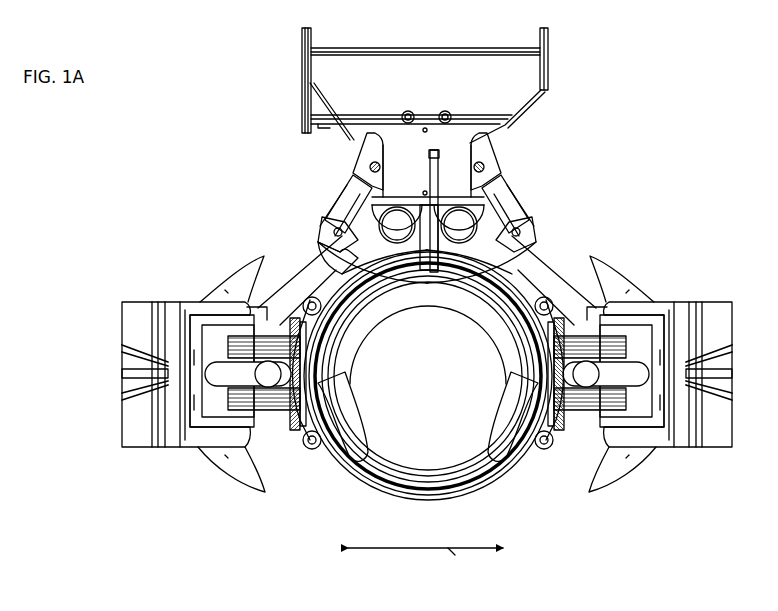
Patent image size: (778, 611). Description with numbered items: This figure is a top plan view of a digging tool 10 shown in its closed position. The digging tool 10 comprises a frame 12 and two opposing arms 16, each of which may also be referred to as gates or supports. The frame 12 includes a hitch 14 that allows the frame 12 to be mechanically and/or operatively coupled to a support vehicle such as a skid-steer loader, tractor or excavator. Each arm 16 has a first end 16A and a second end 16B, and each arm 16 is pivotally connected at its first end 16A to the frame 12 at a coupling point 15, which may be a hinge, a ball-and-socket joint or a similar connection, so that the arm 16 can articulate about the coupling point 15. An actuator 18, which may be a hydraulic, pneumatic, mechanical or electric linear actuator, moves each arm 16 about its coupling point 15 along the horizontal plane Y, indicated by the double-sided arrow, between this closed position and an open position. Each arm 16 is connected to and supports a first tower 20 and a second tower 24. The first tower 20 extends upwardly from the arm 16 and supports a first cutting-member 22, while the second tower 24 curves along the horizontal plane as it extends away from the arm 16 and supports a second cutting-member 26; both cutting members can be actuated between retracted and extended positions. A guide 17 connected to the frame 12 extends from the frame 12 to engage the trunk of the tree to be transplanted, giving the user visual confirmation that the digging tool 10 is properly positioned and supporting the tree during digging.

The digging tool 10 is at (226, 128).
The frame 12 is at (493, 147).
The hitch 14 is at (450, 50).
The coupling point 15 is at (356, 186).
The arm 16 is at (272, 270).
The first end 16A is at (360, 222).
The second end 16B is at (265, 272).
The guide 17 is at (370, 344).
The actuator 18 is at (330, 176).
The first tower 20 is at (338, 456).
The first cutting-member 22 is at (372, 478).
The second tower 24 is at (162, 300).
The second cutting-member 26 is at (232, 480).